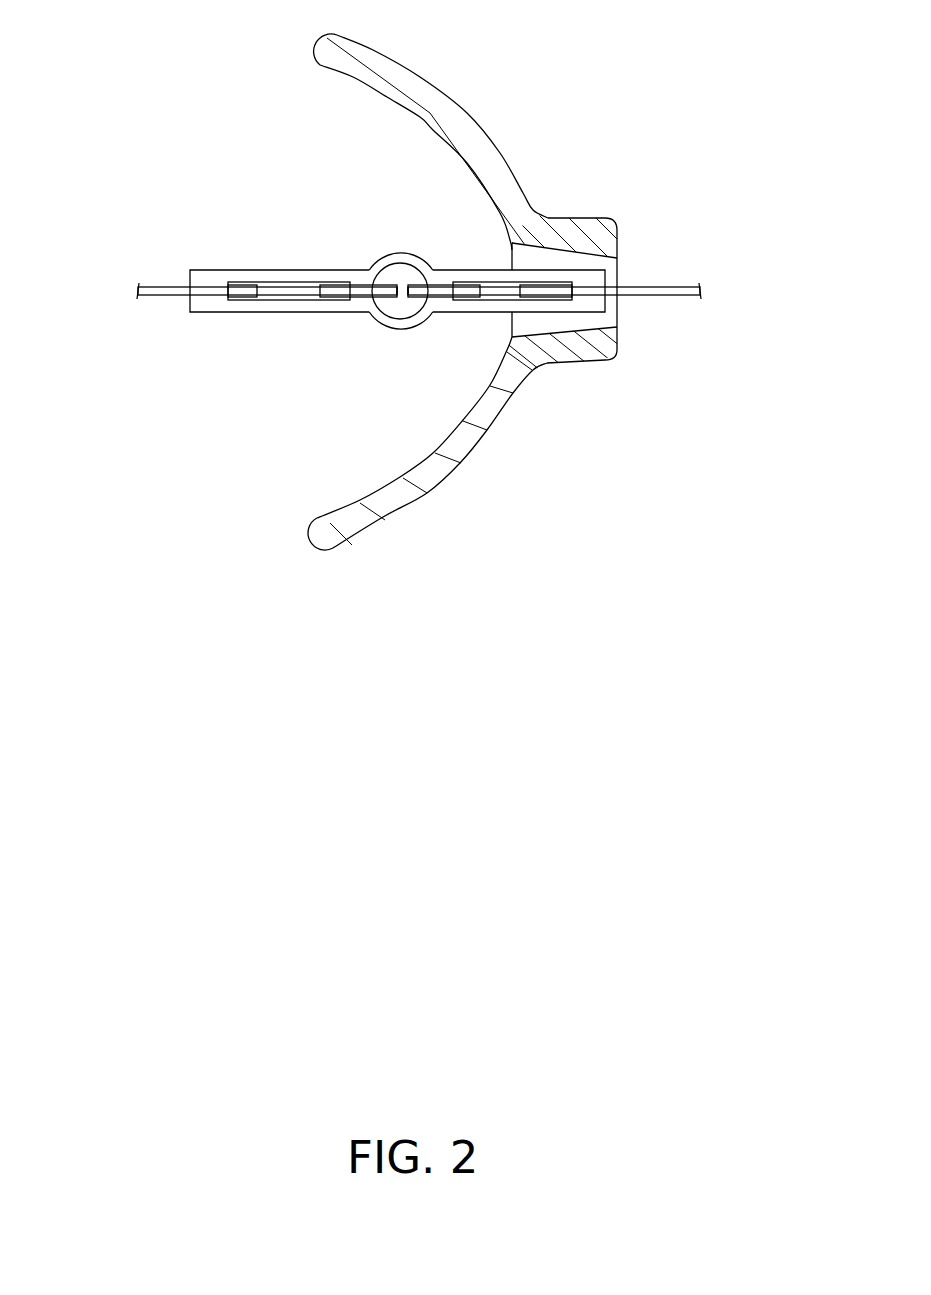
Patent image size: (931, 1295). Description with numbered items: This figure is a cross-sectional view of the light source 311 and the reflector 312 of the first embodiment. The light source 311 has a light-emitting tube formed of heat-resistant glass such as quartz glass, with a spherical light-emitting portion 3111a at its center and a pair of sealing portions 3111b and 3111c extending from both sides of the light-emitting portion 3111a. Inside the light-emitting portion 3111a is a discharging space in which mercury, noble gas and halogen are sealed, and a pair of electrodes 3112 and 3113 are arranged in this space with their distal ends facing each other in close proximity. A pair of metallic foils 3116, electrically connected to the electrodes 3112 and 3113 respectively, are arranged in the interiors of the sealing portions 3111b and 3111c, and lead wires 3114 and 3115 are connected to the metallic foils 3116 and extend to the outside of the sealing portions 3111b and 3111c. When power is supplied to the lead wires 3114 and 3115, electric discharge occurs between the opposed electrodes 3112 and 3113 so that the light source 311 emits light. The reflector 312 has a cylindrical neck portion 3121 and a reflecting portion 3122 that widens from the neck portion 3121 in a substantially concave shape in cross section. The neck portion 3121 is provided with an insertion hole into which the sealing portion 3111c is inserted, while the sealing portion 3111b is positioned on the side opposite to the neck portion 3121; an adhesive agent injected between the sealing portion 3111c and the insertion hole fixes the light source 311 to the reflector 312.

The light source 311 is at (323, 182).
The light-emitting portion 3111a is at (398, 329).
The sealing portion 3111b is at (208, 307).
The sealing portion 3111c is at (605, 298).
The electrode 3112 is at (388, 287).
The electrode 3113 is at (414, 285).
The lead wire 3114 is at (165, 286).
The lead wire 3115 is at (672, 287).
The metallic foil 3116 is at (543, 247).
The reflector 312 is at (503, 70).
The neck portion 3121 is at (577, 352).
The reflecting portion 3122 is at (415, 73).